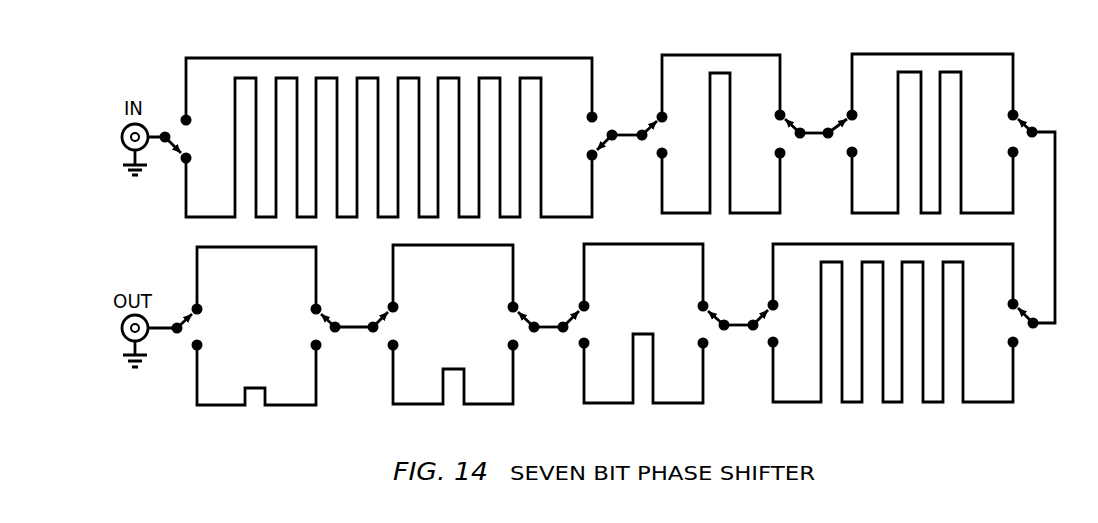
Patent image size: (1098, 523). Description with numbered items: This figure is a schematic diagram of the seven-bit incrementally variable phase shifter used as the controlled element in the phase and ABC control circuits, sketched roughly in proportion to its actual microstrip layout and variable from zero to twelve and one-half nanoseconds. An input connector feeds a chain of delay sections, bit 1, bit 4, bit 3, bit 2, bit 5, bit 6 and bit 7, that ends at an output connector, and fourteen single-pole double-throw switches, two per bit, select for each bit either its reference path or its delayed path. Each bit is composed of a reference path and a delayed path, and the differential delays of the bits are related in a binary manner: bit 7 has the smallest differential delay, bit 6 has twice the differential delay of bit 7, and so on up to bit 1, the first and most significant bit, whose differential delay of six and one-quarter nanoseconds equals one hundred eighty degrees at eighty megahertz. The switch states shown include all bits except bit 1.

The bit 1 is at (389, 126).
The bit 2 is at (893, 338).
The bit 3 is at (933, 121).
The bit 4 is at (721, 121).
The bit 5 is at (644, 338).
The bit 6 is at (453, 339).
The bit 7 is at (257, 341).